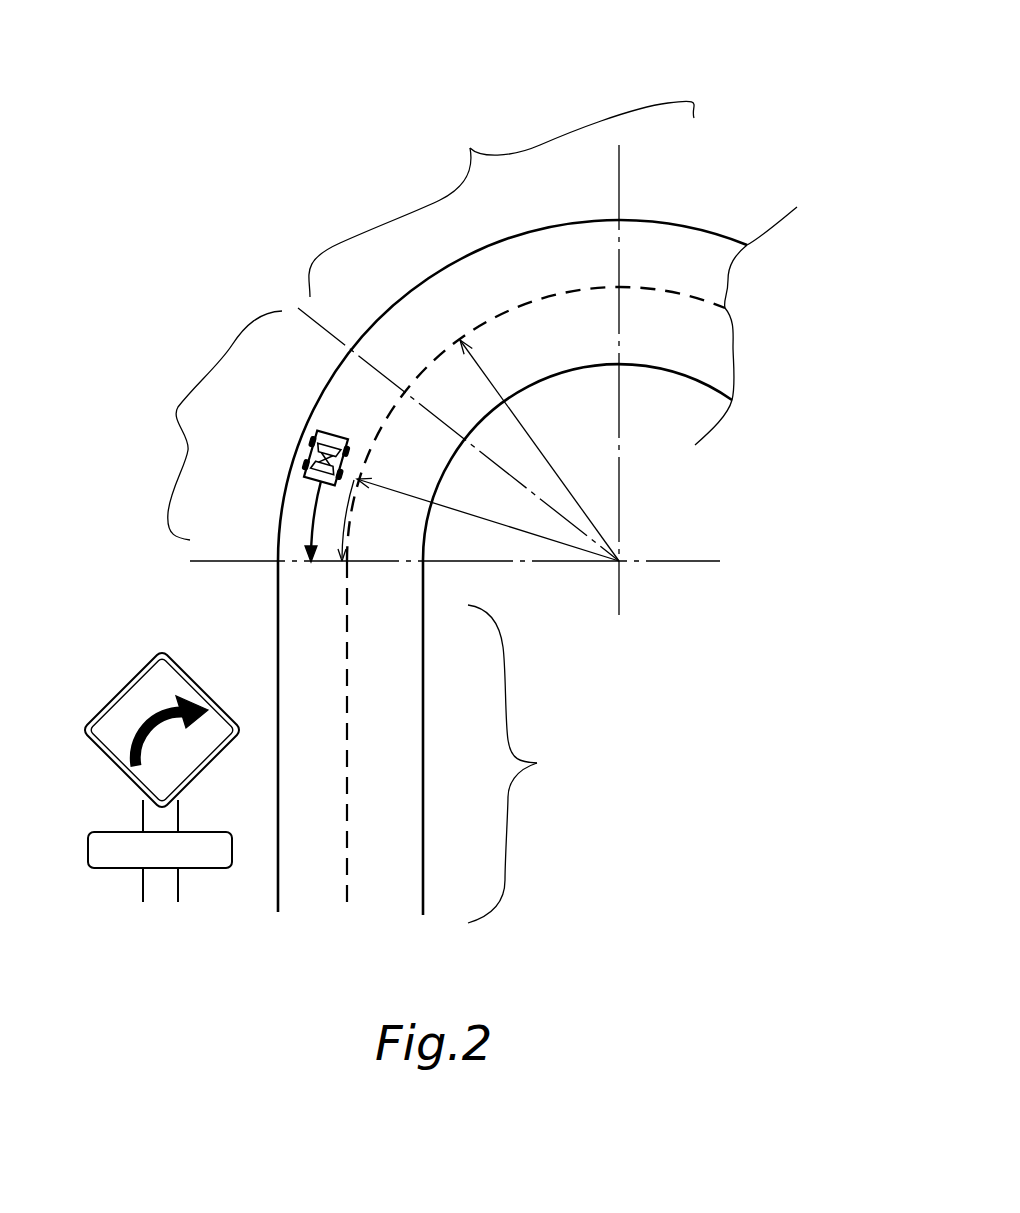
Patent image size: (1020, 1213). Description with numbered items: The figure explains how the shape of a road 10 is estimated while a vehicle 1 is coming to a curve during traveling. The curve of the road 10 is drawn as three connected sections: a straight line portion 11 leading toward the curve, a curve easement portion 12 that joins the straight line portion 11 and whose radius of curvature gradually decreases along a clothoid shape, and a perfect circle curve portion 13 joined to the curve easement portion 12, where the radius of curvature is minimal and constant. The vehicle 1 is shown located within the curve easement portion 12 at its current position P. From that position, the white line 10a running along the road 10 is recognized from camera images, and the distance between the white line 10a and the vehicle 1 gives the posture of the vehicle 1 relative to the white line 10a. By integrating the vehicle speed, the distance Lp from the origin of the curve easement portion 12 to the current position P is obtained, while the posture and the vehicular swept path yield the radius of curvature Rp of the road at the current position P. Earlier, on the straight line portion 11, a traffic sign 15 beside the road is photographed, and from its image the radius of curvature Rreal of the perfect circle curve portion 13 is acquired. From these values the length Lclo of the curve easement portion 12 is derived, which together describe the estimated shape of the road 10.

The vehicle 1 is at (337, 427).
The road 10 is at (296, 201).
The white line 10a is at (480, 327).
The straight line portion 11 is at (537, 763).
The curve easement portion 12 is at (178, 407).
The perfect circle curve portion 13 is at (470, 148).
The traffic sign 15 is at (122, 685).
The current position P is at (307, 460).
The distance Lp is at (312, 521).
The radius of curvature Rreal is at (539, 450).
The radius of curvature Rp is at (488, 518).
The length Lclo is at (352, 497).